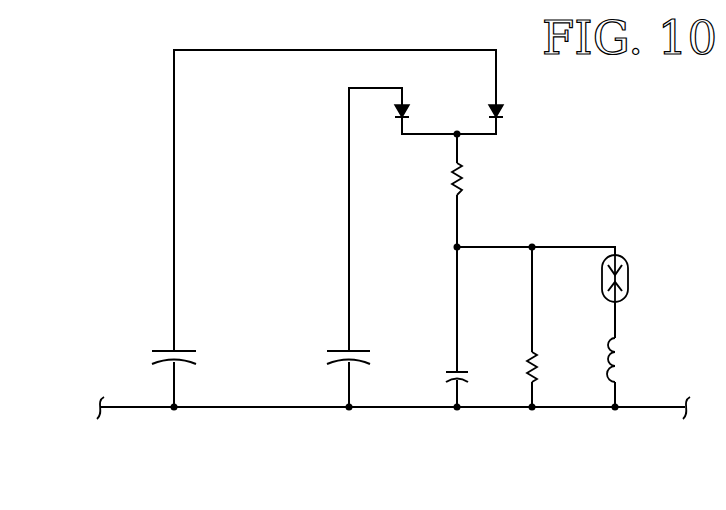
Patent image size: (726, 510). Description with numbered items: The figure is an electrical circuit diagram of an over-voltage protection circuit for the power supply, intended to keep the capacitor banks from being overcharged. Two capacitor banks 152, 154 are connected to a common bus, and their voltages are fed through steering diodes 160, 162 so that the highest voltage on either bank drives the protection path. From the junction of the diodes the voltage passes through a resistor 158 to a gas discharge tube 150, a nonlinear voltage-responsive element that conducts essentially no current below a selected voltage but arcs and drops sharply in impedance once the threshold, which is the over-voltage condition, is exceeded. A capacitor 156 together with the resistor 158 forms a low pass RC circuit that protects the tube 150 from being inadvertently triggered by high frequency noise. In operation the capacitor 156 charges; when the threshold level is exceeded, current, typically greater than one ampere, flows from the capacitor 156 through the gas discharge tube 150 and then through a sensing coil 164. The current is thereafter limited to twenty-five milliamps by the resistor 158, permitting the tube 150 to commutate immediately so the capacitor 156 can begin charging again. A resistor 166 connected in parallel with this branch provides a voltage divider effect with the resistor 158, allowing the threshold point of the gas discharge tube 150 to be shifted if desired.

The gas discharge tube 150 is at (630, 284).
The capacitor bank 152 is at (187, 350).
The capacitor bank 154 is at (354, 350).
The capacitor 156 is at (462, 368).
The resistor 158 is at (460, 164).
The steering diode 160 is at (405, 104).
The steering diode 162 is at (503, 106).
The sensing coil 164 is at (611, 354).
The resistor 166 is at (538, 365).